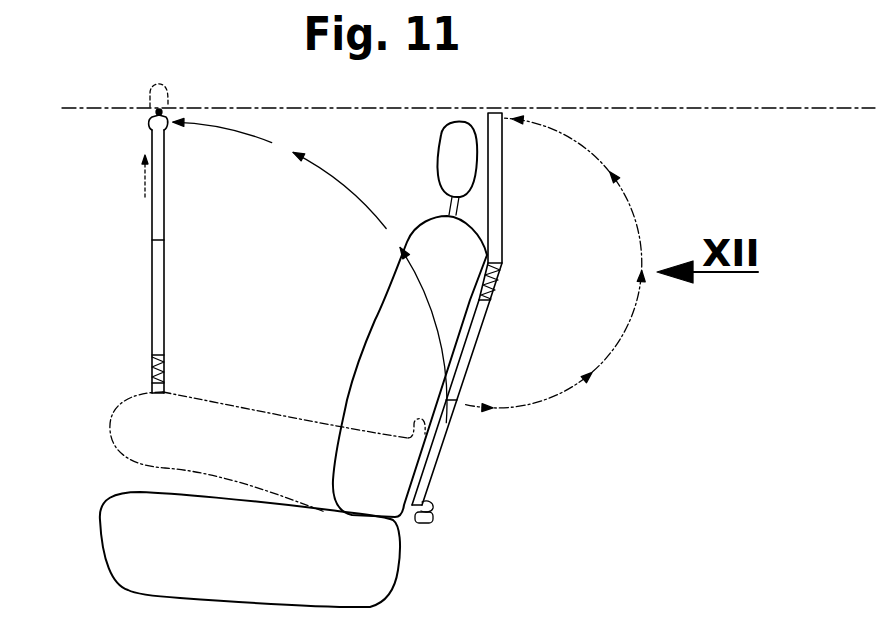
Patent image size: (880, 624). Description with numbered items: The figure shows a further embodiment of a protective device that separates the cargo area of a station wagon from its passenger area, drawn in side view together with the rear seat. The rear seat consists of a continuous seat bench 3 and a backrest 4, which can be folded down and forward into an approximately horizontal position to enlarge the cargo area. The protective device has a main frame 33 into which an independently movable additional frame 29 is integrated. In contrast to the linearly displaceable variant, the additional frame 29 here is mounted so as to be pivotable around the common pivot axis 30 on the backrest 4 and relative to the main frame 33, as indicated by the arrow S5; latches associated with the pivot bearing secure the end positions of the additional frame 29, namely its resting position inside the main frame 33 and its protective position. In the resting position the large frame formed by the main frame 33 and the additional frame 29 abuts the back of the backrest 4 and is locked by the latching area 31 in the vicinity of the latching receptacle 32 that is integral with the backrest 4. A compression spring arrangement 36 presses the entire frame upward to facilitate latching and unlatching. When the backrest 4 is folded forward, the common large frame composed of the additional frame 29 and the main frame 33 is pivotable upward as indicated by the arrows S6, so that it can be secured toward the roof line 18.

The seat bench 3 is at (307, 585).
The backrest 4 is at (360, 407).
The vehicle roof line 18 is at (108, 110).
The additional frame 29 is at (502, 180).
The pivot axis 30 is at (152, 386).
The latching area 31 is at (430, 503).
The latching receptacle 32 is at (430, 523).
The main frame 33 is at (160, 252).
The compression spring arrangement 36 is at (507, 281).
The pivoting direction of additional frame S5 is at (618, 343).
The pivoting direction of common large frame S6 is at (342, 185).